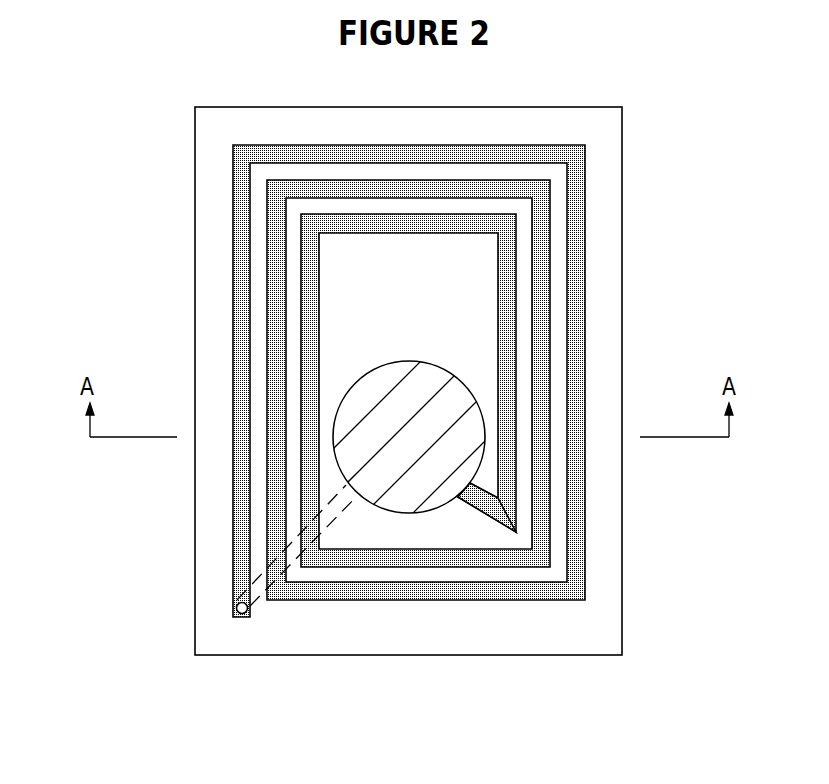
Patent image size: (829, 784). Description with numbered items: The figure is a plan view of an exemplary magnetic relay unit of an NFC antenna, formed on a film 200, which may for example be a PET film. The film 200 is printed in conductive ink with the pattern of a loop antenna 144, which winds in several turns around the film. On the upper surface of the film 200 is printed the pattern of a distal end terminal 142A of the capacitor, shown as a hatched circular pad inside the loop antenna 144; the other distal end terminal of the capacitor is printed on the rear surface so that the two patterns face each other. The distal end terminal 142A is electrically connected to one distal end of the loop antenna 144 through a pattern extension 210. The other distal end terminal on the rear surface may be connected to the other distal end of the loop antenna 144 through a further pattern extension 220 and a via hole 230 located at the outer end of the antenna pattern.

The film 200 is at (606, 132).
The loop antenna 144 is at (552, 352).
The distal end terminal of the capacitor 142A is at (365, 392).
The pattern extension 210 is at (483, 518).
The pattern extension 220 is at (335, 522).
The via hole 230 is at (242, 614).